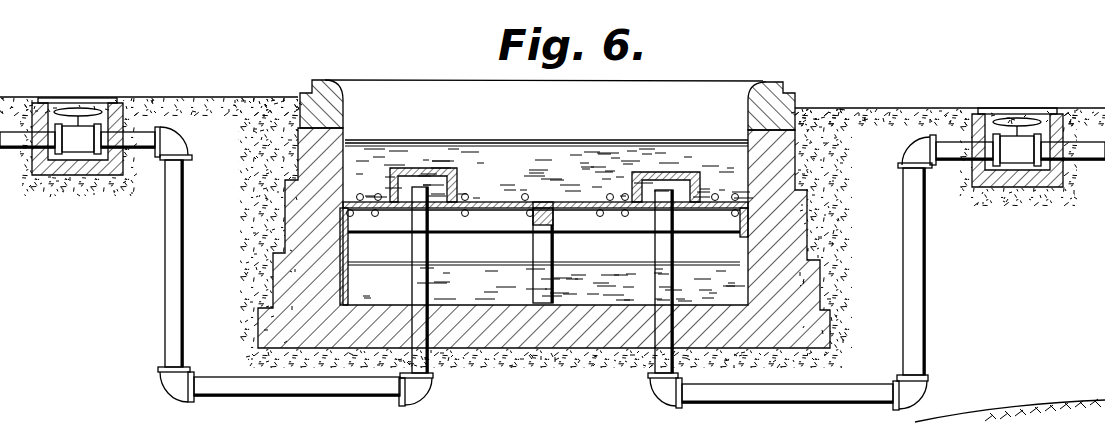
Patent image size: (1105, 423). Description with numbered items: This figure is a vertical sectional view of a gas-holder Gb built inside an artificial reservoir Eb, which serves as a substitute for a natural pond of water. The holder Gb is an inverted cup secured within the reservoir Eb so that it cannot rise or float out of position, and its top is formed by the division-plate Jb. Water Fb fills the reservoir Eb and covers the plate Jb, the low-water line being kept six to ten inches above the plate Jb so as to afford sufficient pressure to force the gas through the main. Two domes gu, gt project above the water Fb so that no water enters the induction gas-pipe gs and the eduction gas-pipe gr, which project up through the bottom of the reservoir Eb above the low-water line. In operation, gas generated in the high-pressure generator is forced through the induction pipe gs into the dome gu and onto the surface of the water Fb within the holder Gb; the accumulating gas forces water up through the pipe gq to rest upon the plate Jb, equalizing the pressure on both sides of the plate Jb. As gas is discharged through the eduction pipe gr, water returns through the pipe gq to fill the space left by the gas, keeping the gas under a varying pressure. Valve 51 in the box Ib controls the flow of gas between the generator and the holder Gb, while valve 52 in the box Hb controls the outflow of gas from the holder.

The reservoir Eb is at (544, 214).
The water Fb is at (549, 221).
The gas-holder Gb is at (590, 204).
The division-plate Jb is at (544, 256).
The dome gu is at (447, 166).
The dome gt is at (692, 170).
The pipe gq is at (555, 246).
The induction gas-pipe gs is at (430, 246).
The eduction gas-pipe gr is at (675, 245).
The box Ib is at (90, 117).
The box Hb is at (990, 125).
The controlling-valve 51 is at (78, 112).
The controlling-valve 52 is at (1017, 122).